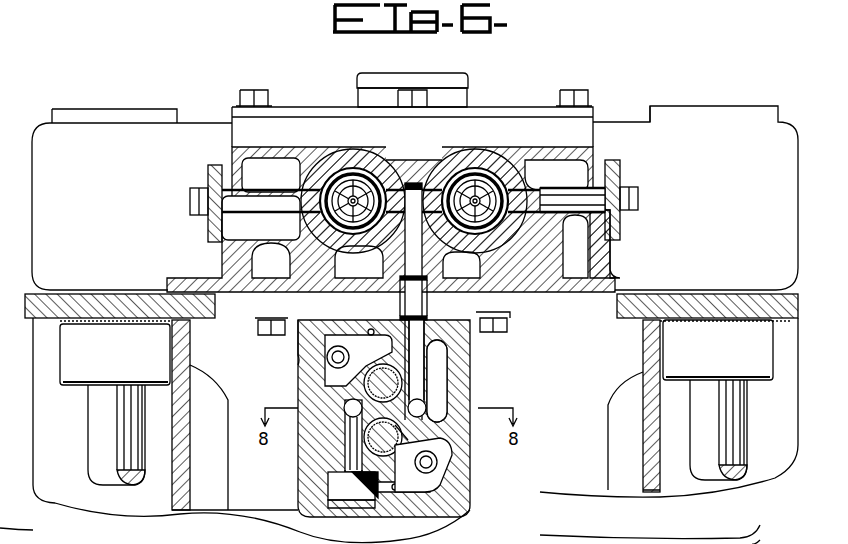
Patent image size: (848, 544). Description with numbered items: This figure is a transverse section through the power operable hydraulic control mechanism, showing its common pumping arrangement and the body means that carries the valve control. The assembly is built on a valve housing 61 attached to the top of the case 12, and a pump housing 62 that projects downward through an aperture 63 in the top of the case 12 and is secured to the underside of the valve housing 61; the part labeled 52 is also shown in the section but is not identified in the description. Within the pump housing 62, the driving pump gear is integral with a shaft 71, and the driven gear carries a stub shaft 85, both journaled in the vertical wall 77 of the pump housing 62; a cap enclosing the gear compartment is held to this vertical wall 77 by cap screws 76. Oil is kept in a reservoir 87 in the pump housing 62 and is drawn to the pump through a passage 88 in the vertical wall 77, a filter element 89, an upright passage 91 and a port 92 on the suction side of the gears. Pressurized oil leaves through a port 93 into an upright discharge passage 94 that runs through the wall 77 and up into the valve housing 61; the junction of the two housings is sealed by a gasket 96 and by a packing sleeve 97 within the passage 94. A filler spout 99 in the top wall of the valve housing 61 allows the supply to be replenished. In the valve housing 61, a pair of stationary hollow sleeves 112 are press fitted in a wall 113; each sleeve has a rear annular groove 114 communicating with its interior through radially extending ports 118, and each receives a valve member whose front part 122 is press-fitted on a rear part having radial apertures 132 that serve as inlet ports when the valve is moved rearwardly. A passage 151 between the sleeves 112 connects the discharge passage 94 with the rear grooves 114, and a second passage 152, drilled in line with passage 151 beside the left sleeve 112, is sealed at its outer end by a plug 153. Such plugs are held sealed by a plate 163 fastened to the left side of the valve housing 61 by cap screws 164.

The case 12 is at (752, 300).
The cylinder bore 52 is at (100, 445).
The valve housing 61 is at (507, 107).
The pump housing 62 is at (472, 376).
The aperture 63 is at (608, 320).
The shaft 71 is at (393, 462).
The cap screws 76 is at (758, 540).
The vertical wall 77 is at (422, 428).
The stub shaft 85 is at (382, 358).
The reservoir 87 is at (455, 461).
The passage 88 is at (390, 497).
The filter element 89 is at (360, 505).
The upright passage 91 is at (310, 438).
The port 92 is at (345, 406).
The port 93 is at (428, 408).
The upright discharge passage 94 is at (365, 250).
The gasket 96 is at (520, 318).
The packing sleeve 97 is at (440, 330).
The filler spout 99 is at (358, 96).
The stationary hollow sleeves 112 is at (352, 178).
The wall 113 is at (302, 185).
The rear annular groove 114 is at (472, 168).
The radially extending ports 118 is at (498, 228).
The front part 122 is at (345, 175).
The apertures 132 is at (505, 235).
The passage 151 is at (401, 180).
The second passage 152 is at (525, 175).
The plug 153 is at (585, 185).
The plate 163 is at (207, 172).
The cap screws 164 is at (190, 201).